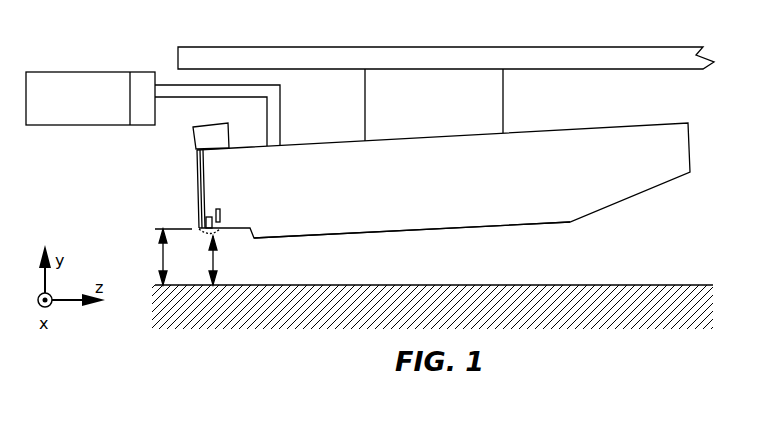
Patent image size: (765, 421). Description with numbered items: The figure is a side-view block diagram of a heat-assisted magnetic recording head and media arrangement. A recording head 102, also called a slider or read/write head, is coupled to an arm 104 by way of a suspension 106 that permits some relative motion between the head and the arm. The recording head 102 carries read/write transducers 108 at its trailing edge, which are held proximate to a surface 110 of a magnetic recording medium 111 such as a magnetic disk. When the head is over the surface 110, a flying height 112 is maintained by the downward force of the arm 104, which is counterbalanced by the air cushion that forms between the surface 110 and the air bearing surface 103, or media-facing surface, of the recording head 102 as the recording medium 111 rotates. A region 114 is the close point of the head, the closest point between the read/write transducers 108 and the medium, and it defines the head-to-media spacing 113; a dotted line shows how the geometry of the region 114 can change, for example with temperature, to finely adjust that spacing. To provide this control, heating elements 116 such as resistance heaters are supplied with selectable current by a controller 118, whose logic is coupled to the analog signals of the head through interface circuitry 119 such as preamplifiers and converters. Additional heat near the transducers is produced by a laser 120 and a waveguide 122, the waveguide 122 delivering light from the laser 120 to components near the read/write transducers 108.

The recording head 102 is at (607, 132).
The air bearing surface 103 is at (330, 237).
The arm 104 is at (647, 50).
The suspension 106 is at (504, 100).
The read/write transducers 108 is at (201, 213).
The surface 110 is at (613, 283).
The magnetic recording medium 111 is at (621, 322).
The flying height 112 is at (159, 257).
The head-to-media spacing 113 is at (198, 260).
The region 114 is at (219, 233).
The heating elements 116 is at (214, 214).
The controller 118 is at (70, 72).
The interface circuitry 119 is at (138, 72).
The laser 120 is at (210, 132).
The waveguide 122 is at (199, 168).